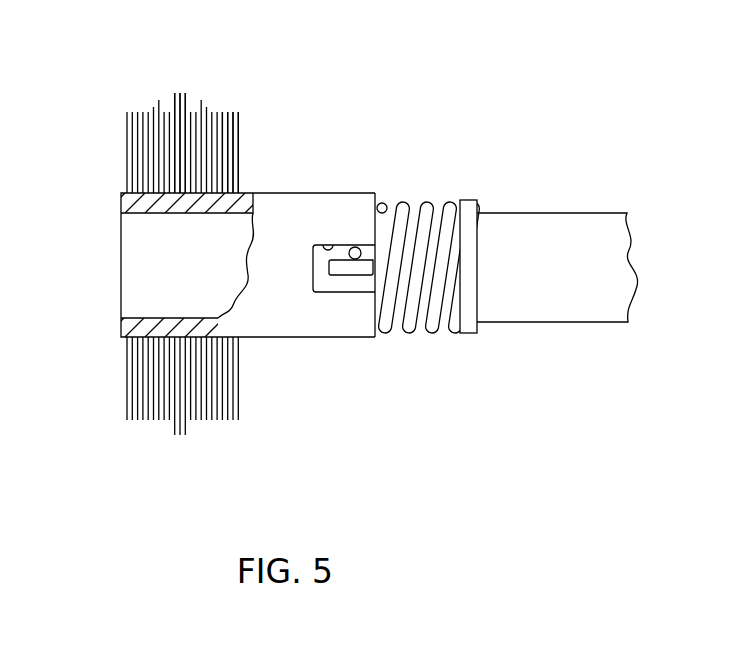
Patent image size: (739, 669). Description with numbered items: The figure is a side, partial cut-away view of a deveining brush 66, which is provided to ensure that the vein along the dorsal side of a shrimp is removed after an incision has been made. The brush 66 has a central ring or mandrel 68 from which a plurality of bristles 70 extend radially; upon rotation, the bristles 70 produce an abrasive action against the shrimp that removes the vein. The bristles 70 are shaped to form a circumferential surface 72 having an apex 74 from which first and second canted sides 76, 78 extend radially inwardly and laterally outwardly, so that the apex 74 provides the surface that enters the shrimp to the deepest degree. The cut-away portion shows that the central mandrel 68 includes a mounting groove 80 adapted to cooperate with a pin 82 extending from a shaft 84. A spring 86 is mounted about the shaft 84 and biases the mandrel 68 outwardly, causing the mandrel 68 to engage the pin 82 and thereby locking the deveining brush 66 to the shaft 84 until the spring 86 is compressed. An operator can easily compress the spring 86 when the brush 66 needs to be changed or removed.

The deveining brush 66 is at (369, 80).
The central mandrel 68 is at (120, 200).
The bristles 70 is at (242, 148).
The circumferential surface 72 is at (159, 83).
The apex 74 is at (188, 93).
The first canted side 76 is at (158, 422).
The second canted side 78 is at (200, 422).
The mounting groove 80 is at (323, 243).
The pin 82 is at (357, 247).
The shaft 84 is at (517, 237).
The spring 86 is at (410, 325).